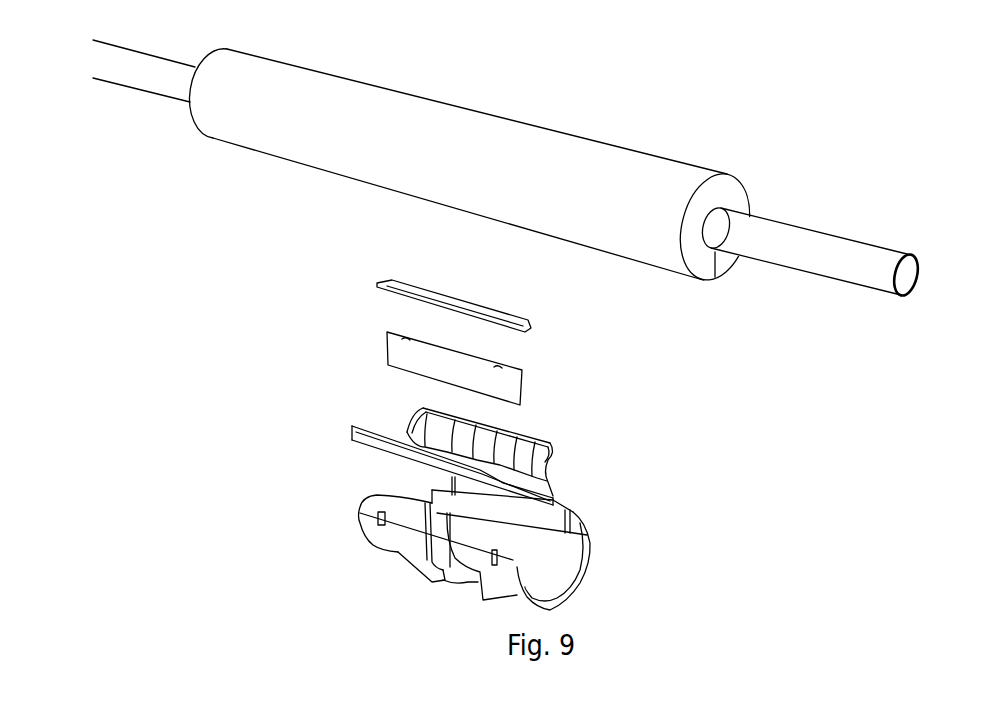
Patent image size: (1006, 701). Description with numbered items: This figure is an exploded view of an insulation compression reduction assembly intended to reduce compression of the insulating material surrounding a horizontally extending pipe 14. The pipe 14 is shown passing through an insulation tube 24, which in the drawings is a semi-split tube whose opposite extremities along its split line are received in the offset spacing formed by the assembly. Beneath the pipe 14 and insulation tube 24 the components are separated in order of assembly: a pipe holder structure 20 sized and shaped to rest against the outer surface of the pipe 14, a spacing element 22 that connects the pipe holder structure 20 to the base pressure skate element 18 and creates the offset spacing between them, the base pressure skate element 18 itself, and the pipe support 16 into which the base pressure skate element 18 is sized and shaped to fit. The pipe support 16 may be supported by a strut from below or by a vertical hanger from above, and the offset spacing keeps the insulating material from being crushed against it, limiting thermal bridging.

The pipe 14 is at (833, 218).
The pipe support 16 is at (587, 584).
The base pressure skate element 18 is at (550, 457).
The pipe holder structure 20 is at (527, 332).
The spacing element 22 is at (532, 394).
The insulation tube 24 is at (492, 110).